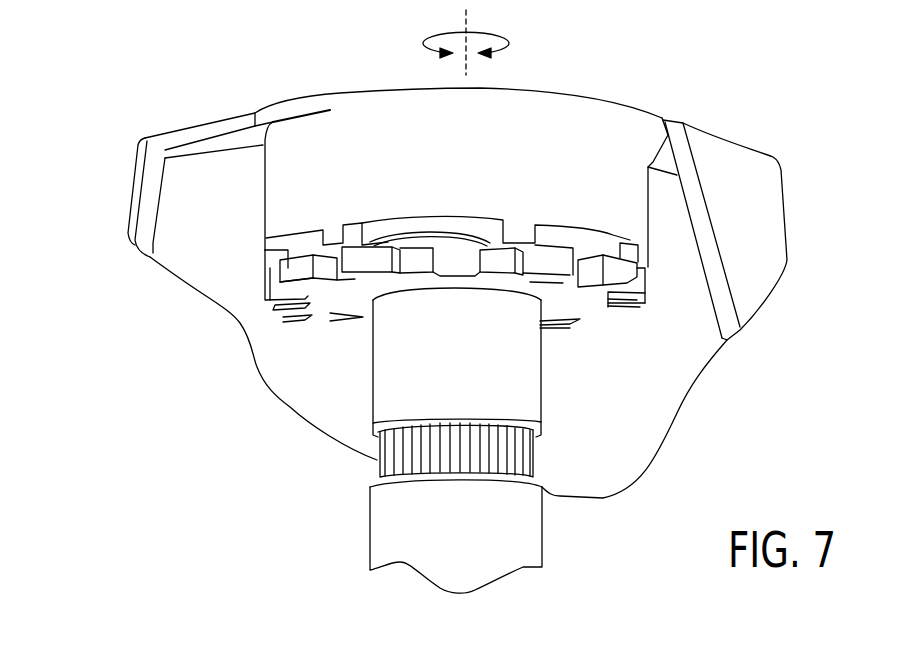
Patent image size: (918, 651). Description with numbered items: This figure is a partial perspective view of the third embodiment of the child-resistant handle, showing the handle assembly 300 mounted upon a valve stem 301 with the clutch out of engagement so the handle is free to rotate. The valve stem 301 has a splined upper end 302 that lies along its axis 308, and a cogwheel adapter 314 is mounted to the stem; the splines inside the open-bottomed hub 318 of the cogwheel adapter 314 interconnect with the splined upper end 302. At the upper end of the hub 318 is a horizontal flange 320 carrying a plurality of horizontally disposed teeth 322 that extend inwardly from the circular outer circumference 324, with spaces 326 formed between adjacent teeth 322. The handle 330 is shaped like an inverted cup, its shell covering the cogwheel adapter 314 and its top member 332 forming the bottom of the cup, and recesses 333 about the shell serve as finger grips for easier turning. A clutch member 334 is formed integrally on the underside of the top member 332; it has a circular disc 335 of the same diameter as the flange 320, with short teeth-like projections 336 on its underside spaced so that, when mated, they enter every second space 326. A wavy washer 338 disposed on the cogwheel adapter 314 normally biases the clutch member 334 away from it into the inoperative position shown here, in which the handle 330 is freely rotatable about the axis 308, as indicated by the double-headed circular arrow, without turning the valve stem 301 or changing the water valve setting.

The handle assembly 300 is at (118, 116).
The valve stem 301 is at (552, 514).
The splined upper end 302 is at (537, 453).
The axis 308 is at (466, 27).
The cogwheel adapter 314 is at (360, 340).
The hub 318 is at (530, 355).
The horizontal flange 320 is at (328, 300).
The teeth 322 is at (540, 281).
The circular outer circumference 324 is at (263, 282).
The spaces 326 is at (645, 283).
The handle 330 is at (185, 124).
The top member 332 is at (305, 98).
The recesses 333 is at (738, 166).
The clutch member 334 is at (243, 207).
The circular disc 335 is at (576, 128).
The projections 336 is at (520, 228).
The wavy washer 338 is at (415, 235).